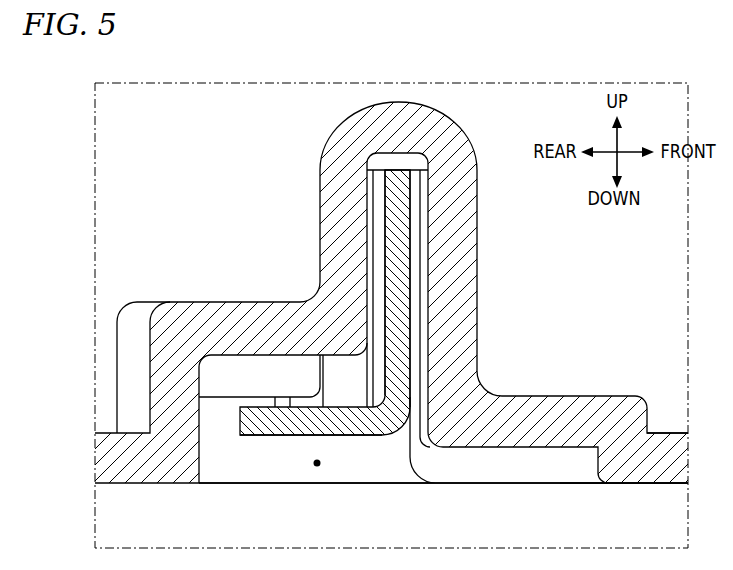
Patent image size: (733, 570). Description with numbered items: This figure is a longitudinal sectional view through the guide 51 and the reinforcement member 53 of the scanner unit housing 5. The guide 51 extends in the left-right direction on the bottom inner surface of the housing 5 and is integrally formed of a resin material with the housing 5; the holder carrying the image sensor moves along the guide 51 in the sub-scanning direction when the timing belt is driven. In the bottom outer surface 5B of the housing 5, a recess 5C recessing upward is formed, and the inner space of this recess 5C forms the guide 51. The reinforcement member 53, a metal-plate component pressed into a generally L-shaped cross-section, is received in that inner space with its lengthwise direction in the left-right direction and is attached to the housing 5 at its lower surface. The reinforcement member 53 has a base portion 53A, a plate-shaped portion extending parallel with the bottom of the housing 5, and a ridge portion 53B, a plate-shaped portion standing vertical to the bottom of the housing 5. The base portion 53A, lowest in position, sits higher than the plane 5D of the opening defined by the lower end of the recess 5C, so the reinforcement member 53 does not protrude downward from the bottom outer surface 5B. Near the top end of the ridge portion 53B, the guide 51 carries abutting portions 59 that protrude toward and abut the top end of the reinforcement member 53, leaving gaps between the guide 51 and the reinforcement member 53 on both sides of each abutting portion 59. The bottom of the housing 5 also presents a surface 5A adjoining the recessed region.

The housing 5 is at (409, 465).
The upper surface of base plate 5A is at (667, 433).
The bottom outer surface 5B is at (667, 486).
The recess 5C is at (317, 467).
The plane of the opening 5D is at (363, 485).
The guide 51 is at (470, 147).
The reinforcement member 53 is at (315, 326).
The base portion 53A is at (328, 435).
The ridge portion 53B is at (386, 348).
The abutting portions 59 is at (418, 170).